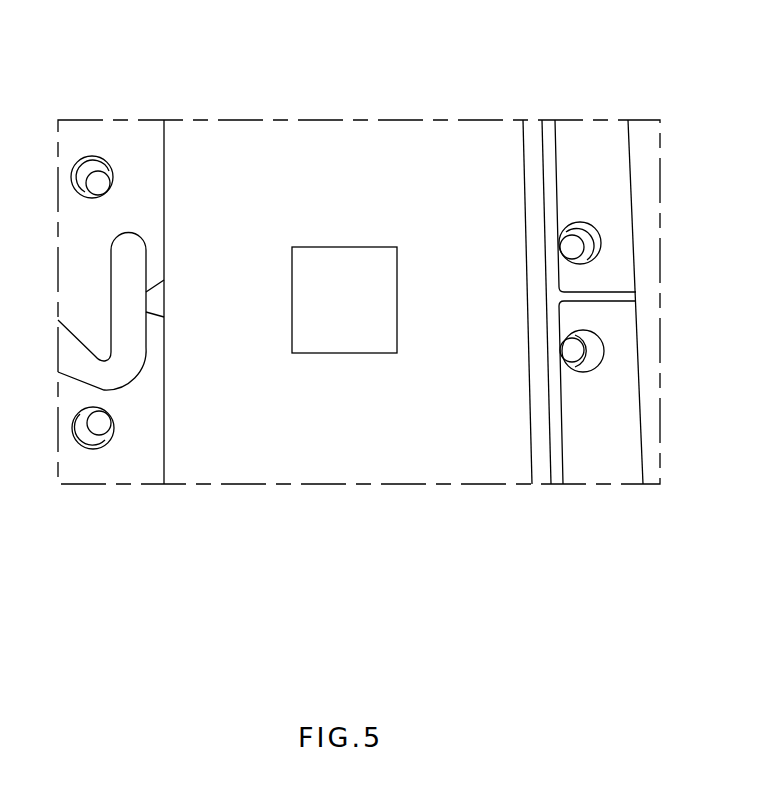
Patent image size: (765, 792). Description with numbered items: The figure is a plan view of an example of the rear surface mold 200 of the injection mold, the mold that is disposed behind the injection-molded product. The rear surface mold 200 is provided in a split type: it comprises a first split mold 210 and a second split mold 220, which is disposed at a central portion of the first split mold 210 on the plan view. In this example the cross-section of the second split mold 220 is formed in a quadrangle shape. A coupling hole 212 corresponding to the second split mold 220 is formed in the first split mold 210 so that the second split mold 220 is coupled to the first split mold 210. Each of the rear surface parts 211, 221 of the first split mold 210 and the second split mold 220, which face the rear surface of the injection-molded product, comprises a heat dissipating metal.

The rear surface mold 200 is at (587, 92).
The first split mold 210 is at (493, 490).
The rear surface part 211 is at (463, 135).
The coupling hole 212 is at (291, 302).
The second split mold 220 is at (342, 364).
The rear surface part 221 is at (340, 262).